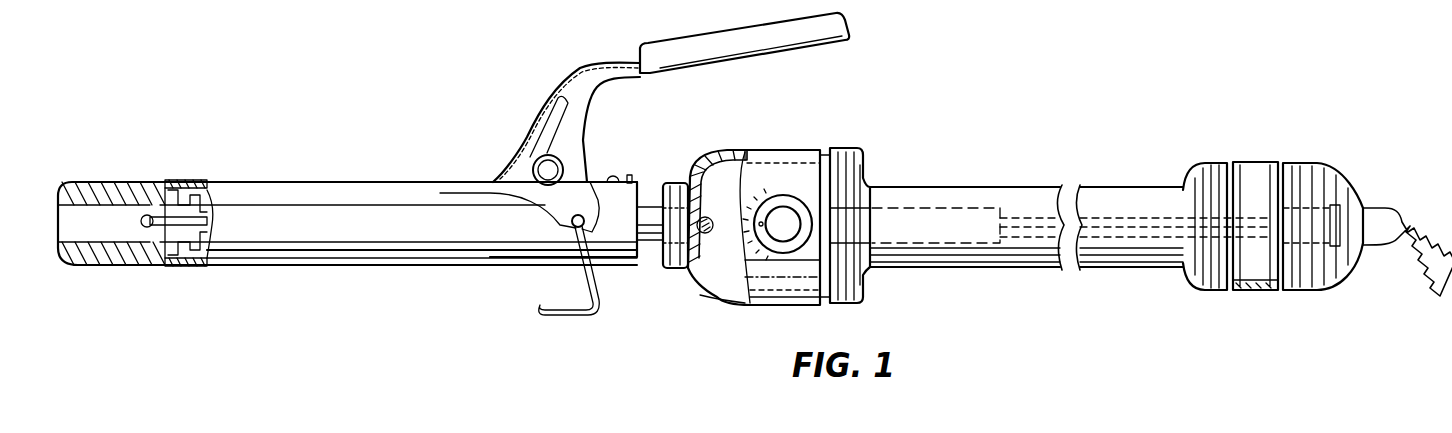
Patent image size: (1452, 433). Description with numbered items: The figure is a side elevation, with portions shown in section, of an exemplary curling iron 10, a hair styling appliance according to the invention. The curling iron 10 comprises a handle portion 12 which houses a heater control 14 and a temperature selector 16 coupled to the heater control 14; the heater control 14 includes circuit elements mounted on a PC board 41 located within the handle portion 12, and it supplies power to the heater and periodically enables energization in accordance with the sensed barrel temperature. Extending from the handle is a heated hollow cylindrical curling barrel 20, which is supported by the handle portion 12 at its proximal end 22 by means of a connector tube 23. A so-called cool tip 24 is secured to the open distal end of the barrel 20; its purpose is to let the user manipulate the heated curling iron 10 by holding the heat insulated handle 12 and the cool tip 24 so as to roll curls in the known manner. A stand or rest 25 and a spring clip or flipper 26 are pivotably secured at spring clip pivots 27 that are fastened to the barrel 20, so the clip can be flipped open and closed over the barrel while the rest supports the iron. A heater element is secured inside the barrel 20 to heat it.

The curling iron 10 is at (950, 131).
The handle portion 12 is at (915, 265).
The heater control 14 is at (733, 297).
The temperature selector 16 is at (785, 197).
The curling barrel 20 is at (378, 267).
The proximal end 22 is at (647, 258).
The connector tube 23 is at (653, 183).
The cool tip 24 is at (118, 182).
The stand or rest 25 is at (565, 315).
The spring clip or flipper 26 is at (198, 180).
The spring clip pivots 27 is at (574, 229).
The PC board 41 is at (737, 150).